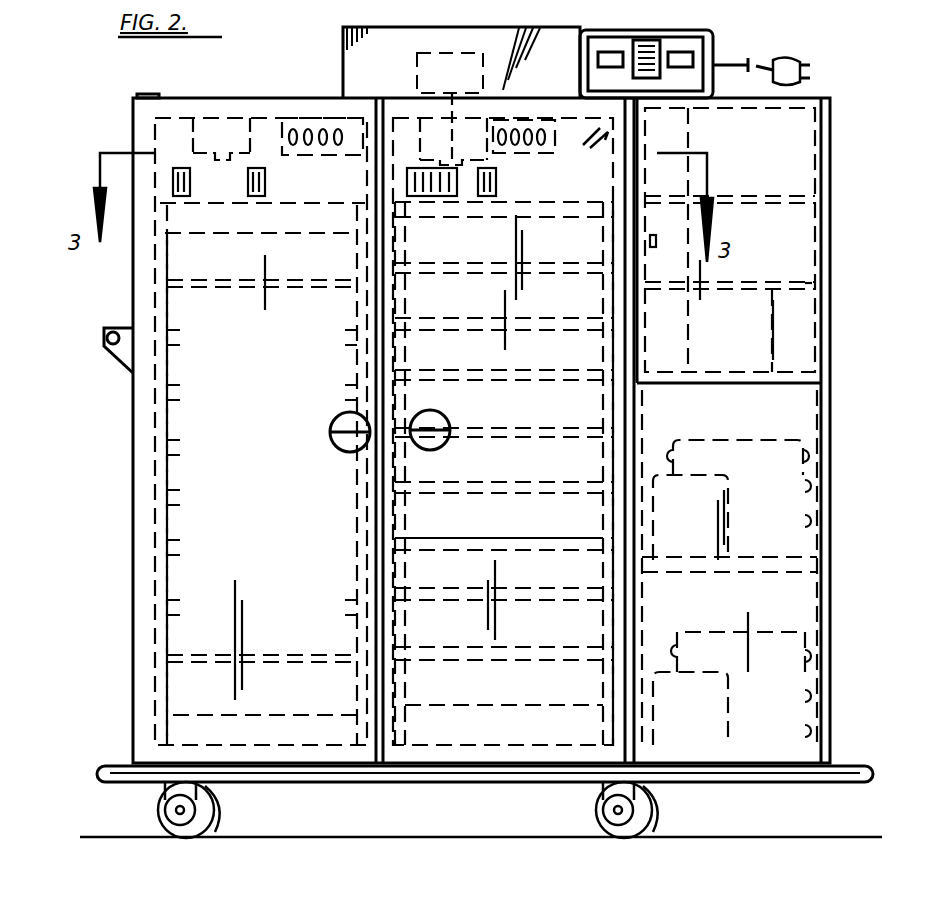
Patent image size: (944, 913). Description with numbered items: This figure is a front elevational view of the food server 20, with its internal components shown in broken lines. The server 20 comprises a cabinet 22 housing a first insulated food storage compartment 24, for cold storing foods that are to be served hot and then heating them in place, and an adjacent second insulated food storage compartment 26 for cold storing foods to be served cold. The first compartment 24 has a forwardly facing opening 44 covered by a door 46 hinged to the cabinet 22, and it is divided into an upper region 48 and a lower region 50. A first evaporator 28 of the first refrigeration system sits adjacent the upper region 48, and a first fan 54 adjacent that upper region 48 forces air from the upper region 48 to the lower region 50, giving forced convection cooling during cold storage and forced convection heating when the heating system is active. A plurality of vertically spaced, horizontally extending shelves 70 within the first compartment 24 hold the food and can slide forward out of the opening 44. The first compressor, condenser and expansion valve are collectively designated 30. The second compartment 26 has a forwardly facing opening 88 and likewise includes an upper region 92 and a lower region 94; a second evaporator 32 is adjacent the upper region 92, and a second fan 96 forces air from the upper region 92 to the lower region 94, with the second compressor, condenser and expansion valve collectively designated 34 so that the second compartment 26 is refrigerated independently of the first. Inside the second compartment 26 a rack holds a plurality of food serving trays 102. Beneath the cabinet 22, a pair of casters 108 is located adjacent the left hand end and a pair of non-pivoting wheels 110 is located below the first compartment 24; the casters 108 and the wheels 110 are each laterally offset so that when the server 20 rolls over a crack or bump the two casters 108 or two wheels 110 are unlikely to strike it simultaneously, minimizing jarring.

The food server 20 is at (100, 458).
The cabinet 22 is at (838, 428).
The first insulated food storage compartment 24 is at (500, 682).
The second insulated food storage compartment 26 is at (200, 513).
The first evaporator 28 is at (516, 160).
The first compressor, condenser and expansion valve 30 is at (770, 642).
The second evaporator 32 is at (296, 124).
The second compressor, condenser and expansion valve 34 is at (760, 502).
The forwardly facing opening 44 is at (513, 468).
The door 46 is at (553, 735).
The upper region 48 is at (552, 258).
The lower region 50 is at (435, 740).
The first fan 54 is at (448, 197).
The trays or shelves 70 is at (552, 532).
The forwardly facing opening 88 is at (215, 547).
The upper region 92 is at (175, 245).
The lower region 94 is at (168, 733).
The second fan 96 is at (266, 180).
The food serving trays 102 is at (208, 285).
The casters 108 is at (215, 840).
The non-pivoting wheels 110 is at (654, 840).